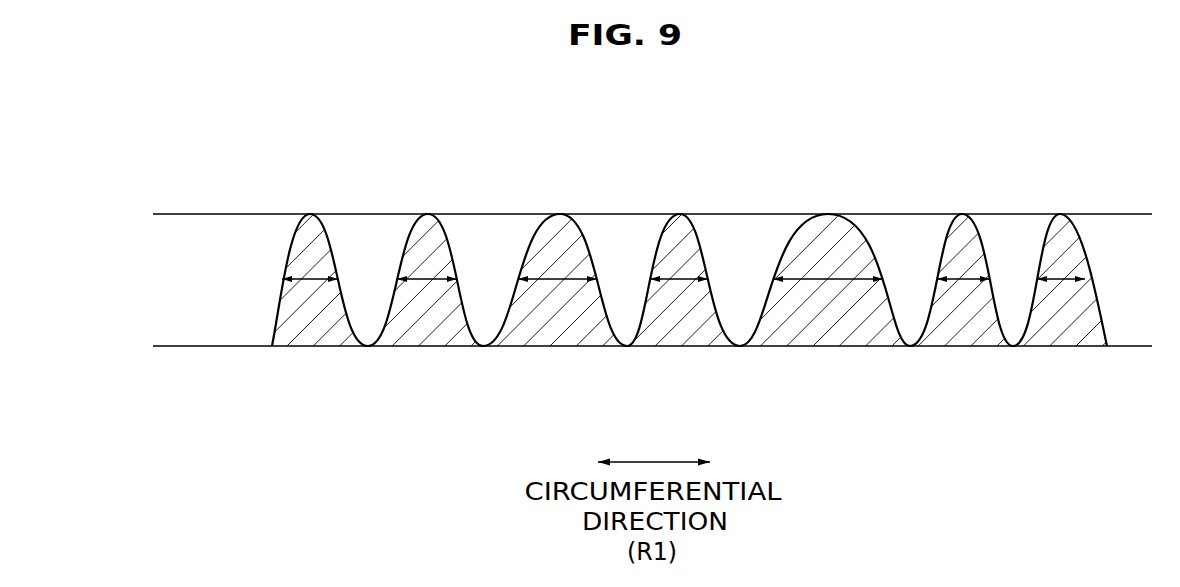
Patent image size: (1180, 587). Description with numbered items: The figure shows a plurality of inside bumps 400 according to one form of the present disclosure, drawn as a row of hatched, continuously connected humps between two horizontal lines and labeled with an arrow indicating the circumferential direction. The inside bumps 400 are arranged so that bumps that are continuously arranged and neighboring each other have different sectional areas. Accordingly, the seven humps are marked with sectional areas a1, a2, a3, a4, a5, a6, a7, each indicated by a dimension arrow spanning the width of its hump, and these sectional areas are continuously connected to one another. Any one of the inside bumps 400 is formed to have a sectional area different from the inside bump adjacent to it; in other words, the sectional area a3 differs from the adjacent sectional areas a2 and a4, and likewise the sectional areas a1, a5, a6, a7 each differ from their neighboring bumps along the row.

The inside bumps 400 is at (427, 328).
The sectional area a1 is at (310, 294).
The sectional area a2 is at (427, 294).
The sectional area a3 is at (557, 294).
The sectional area a4 is at (679, 294).
The sectional area a5 is at (828, 294).
The sectional area a6 is at (963, 294).
The sectional area a7 is at (1061, 294).